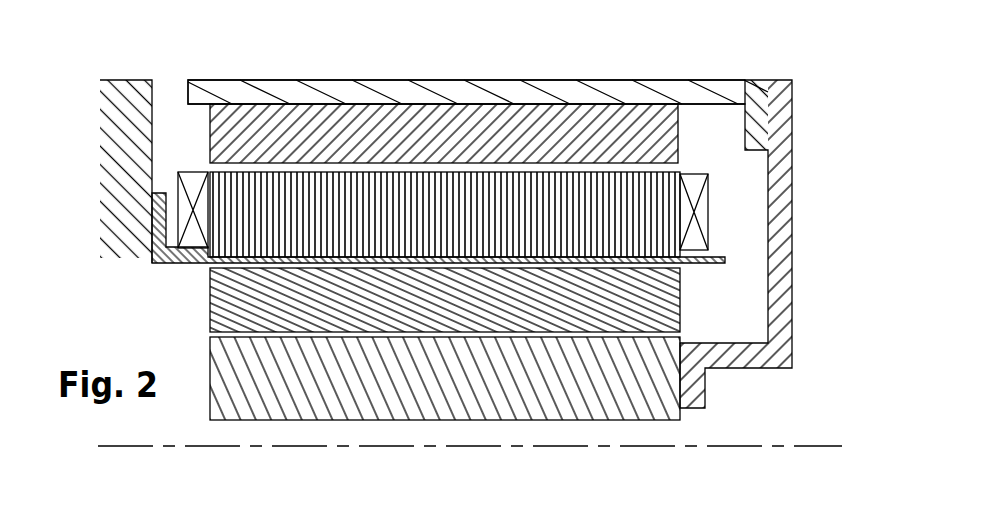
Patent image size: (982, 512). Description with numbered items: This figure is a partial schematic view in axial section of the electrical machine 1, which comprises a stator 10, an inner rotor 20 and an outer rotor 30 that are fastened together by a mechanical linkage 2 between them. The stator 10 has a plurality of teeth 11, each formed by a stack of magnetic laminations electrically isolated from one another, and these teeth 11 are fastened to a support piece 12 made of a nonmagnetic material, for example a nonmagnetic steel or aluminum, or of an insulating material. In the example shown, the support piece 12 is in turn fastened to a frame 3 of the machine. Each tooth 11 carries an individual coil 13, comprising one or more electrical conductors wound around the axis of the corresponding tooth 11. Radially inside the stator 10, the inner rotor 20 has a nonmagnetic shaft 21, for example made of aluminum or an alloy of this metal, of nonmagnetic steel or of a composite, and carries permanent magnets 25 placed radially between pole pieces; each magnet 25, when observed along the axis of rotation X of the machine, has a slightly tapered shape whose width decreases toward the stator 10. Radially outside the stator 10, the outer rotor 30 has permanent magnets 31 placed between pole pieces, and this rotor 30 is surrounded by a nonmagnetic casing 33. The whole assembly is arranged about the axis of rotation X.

The electrical machine 1 is at (520, 208).
The mechanical linkage 2 is at (790, 172).
The frame 3 is at (122, 198).
The stator 10 is at (455, 200).
The teeth 11 is at (667, 187).
The support piece 12 is at (723, 262).
The individual coil 13 is at (705, 223).
The inner rotor 20 is at (427, 344).
The nonmagnetic shaft 21 is at (665, 390).
The permanent magnets 25 is at (668, 300).
The outer rotor 30 is at (451, 87).
The permanent magnets 31 is at (673, 135).
The nonmagnetic casing 33 is at (622, 87).
The axis of rotation X is at (818, 447).